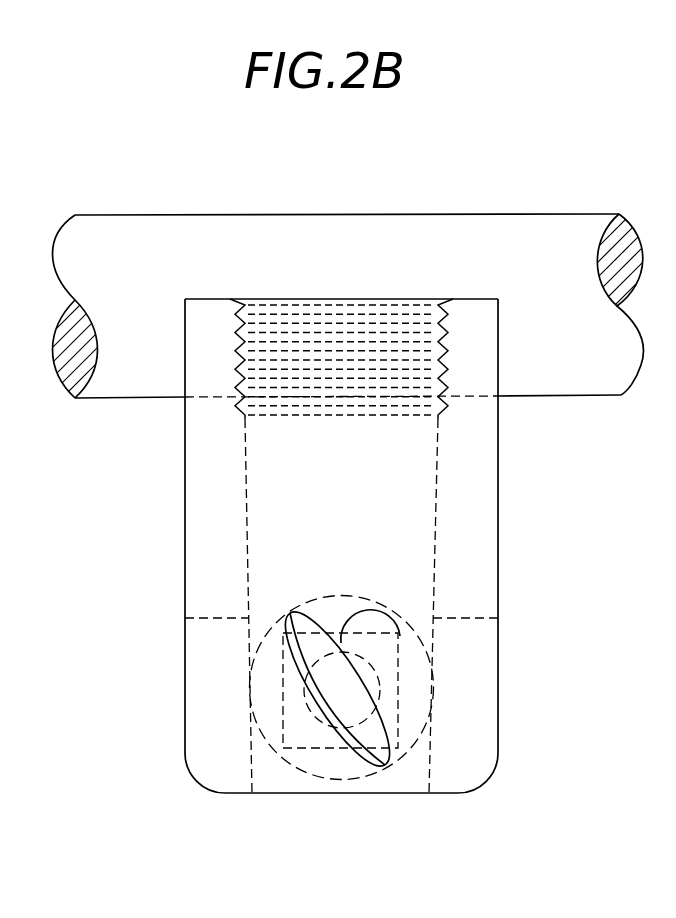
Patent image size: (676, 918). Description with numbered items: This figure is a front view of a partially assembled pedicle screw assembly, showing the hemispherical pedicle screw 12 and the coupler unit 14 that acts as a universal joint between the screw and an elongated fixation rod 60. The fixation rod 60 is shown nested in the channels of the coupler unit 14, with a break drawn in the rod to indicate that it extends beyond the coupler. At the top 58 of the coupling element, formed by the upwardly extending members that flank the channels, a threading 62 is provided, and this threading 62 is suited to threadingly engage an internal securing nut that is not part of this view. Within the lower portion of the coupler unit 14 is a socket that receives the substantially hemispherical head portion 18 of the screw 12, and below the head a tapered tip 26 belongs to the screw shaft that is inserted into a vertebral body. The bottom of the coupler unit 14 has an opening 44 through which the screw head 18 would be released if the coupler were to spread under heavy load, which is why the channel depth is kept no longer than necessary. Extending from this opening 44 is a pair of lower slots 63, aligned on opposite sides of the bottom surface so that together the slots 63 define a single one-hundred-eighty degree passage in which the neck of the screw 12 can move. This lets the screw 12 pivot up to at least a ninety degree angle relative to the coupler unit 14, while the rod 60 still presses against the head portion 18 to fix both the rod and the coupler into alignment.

The hemispherical pedicle screw 12 is at (312, 803).
The coupler unit 14 is at (514, 633).
The hemispherical head portion 18 is at (340, 777).
The tapered tip 26 is at (343, 676).
The opening 44 is at (379, 760).
The top of the channels 58 is at (211, 298).
The elongated fixation rod 60 is at (477, 224).
The threading 62 is at (403, 323).
The lower slots 63 is at (297, 745).